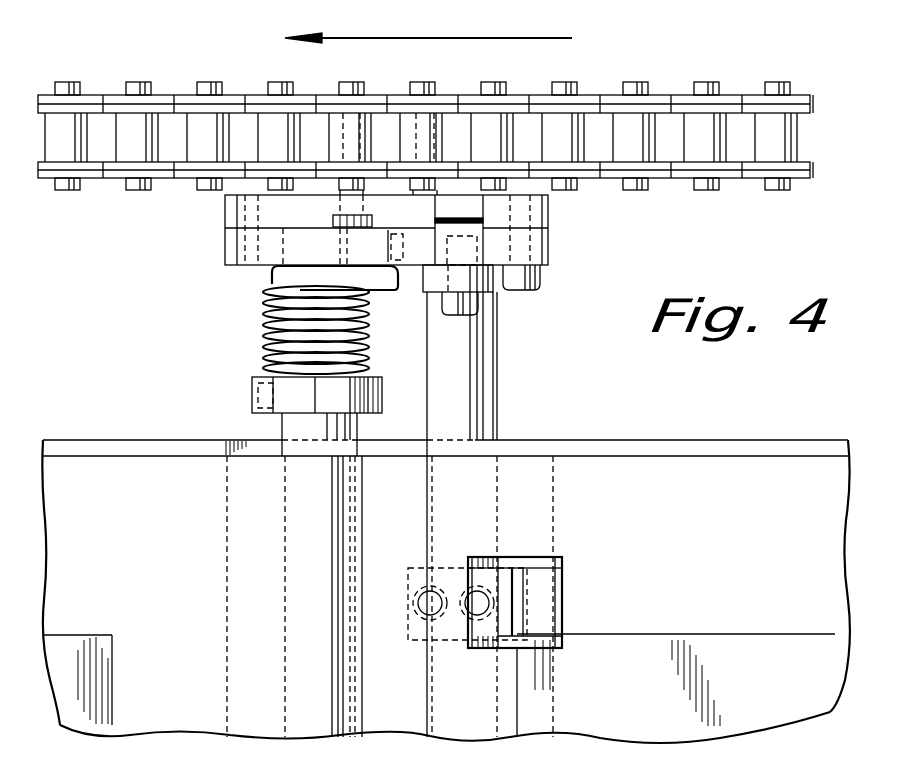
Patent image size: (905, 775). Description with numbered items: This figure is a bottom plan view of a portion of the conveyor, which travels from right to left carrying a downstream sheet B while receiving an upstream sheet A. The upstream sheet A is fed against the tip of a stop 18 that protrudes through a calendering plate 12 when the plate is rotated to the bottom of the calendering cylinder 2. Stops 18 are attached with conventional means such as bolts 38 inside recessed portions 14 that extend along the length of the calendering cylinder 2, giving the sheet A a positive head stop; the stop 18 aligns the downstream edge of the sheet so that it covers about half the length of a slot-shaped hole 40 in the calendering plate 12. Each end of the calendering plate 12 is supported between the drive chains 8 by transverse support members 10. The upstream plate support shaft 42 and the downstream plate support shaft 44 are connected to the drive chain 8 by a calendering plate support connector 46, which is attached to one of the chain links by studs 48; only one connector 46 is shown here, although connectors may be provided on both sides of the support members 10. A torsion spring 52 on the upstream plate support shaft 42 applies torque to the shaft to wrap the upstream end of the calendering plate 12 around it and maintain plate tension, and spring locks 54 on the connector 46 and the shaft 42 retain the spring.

The calendering cylinder 2 is at (651, 438).
The drive chain 8 is at (646, 122).
The support member 10 is at (214, 241).
The calendering plate 12 is at (130, 478).
The recessed portion 14 is at (530, 437).
The stop 18 is at (540, 600).
The bolt 38 is at (455, 628).
The hole 40 is at (553, 553).
The upstream plate support shaft 42 is at (288, 432).
The downstream plate support shaft 44 is at (485, 344).
The calendering plate support connector 46 is at (548, 237).
The stud 48 is at (419, 82).
The torsion spring 52 is at (262, 318).
The spring lock 54 is at (410, 263).
The upstream sheet A is at (636, 648).
The downstream sheet B is at (92, 638).